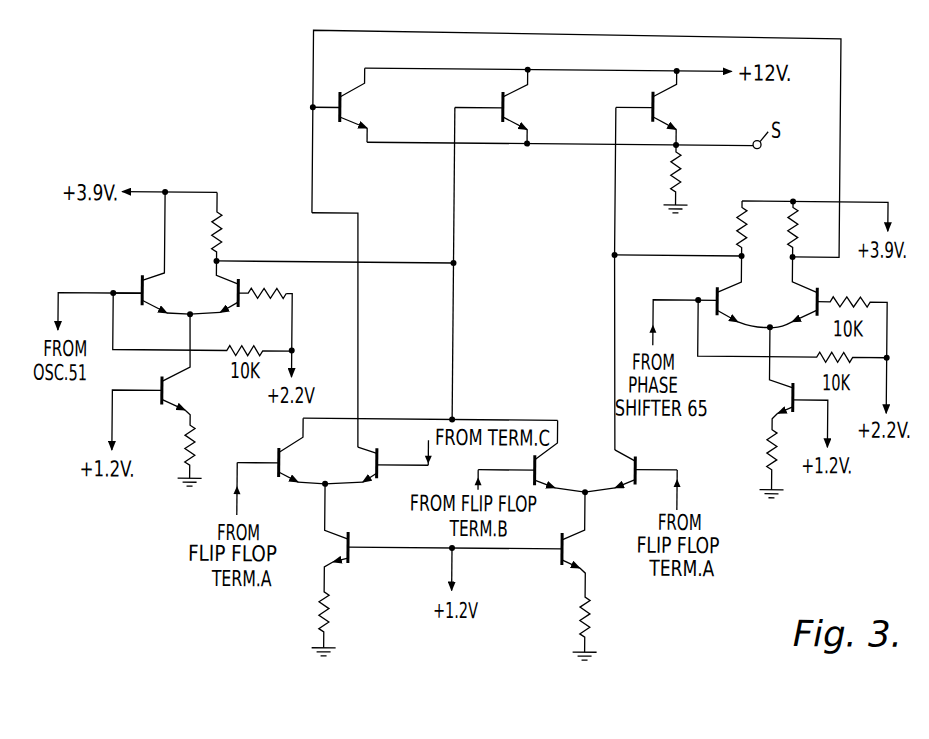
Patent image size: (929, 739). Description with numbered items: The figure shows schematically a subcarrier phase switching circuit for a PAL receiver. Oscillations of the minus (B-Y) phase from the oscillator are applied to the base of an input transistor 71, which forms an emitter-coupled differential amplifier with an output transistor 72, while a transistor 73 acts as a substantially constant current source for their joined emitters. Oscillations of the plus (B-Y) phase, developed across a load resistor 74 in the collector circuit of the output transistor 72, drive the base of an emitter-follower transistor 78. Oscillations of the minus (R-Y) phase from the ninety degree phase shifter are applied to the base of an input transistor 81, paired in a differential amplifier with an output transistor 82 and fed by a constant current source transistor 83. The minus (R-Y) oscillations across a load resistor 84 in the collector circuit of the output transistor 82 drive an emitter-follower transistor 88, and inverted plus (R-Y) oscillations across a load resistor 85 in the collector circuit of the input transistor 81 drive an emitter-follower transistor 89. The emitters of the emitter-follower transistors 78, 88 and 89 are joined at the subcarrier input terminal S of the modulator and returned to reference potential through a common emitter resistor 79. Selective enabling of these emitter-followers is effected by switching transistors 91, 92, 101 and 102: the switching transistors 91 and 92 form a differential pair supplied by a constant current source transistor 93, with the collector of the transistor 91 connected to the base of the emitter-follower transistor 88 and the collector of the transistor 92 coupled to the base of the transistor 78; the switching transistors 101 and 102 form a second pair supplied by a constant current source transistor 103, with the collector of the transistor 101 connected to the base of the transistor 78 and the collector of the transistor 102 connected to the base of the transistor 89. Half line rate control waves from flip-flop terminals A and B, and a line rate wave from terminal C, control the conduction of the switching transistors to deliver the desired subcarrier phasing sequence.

The input transistor 71 is at (138, 286).
The output transistor 72 is at (242, 287).
The constant current source transistor 73 is at (159, 380).
The load resistor 74 is at (212, 234).
The emitter-follower transistor 78 is at (499, 103).
The common emitter resistor 79 is at (671, 176).
The input transistor 81 is at (713, 291).
The output transistor 82 is at (822, 290).
The constant current source transistor 83 is at (796, 410).
The load resistor 84 is at (796, 216).
The load resistor 85 is at (739, 214).
The emitter-follower transistor 88 is at (338, 93).
The emitter-follower transistor 89 is at (648, 103).
The switching transistor 91 is at (278, 454).
The switching transistor 92 is at (380, 449).
The constant current source transistor 93 is at (362, 529).
The switching transistor 101 is at (547, 467).
The switching transistor 102 is at (640, 461).
The constant current source transistor 103 is at (564, 536).